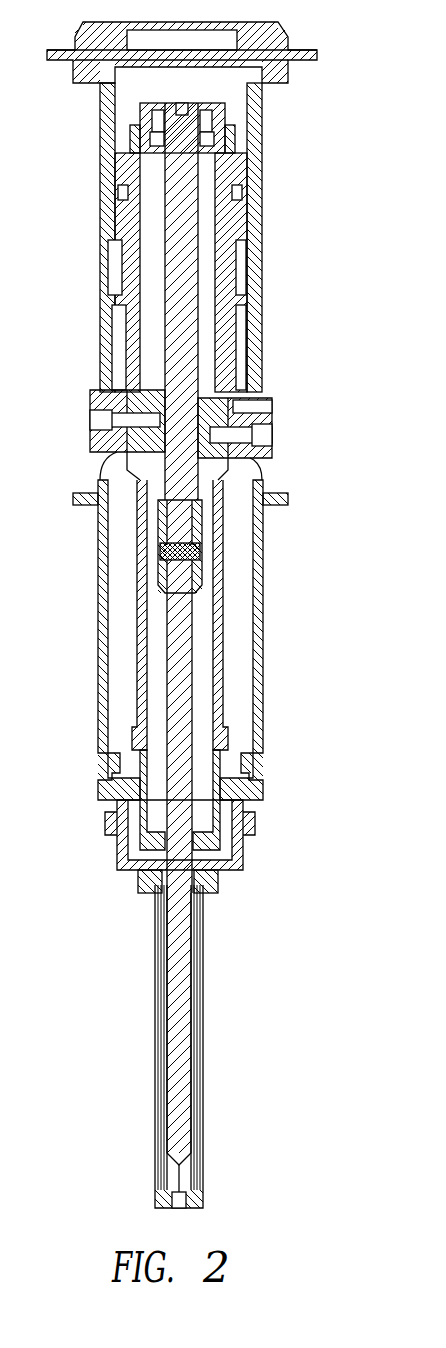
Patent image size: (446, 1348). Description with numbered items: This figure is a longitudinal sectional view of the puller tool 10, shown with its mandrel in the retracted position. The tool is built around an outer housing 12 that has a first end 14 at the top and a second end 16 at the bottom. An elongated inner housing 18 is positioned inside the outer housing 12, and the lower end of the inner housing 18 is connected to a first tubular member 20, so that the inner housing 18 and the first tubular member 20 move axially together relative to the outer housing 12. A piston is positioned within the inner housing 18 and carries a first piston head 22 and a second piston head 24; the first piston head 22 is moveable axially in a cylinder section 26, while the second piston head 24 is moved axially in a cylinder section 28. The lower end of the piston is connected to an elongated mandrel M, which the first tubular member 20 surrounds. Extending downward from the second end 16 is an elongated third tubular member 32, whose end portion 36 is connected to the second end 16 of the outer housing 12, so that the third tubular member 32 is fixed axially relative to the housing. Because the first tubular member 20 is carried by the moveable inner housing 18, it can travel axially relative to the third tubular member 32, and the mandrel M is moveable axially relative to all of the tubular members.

The puller tool 10 is at (88, 547).
The outer housing 12 is at (97, 663).
The first end 14 is at (85, 82).
The second end 16 is at (117, 843).
The inner housing 18 is at (240, 645).
The first tubular member 20 is at (197, 857).
The first piston head 22 is at (196, 118).
The second piston head 24 is at (208, 473).
The cylinder section 26 is at (216, 246).
The cylinder section 28 is at (217, 607).
The third tubular member 32 is at (155, 1005).
The end portion 36 is at (140, 884).
The mandrel M is at (185, 698).